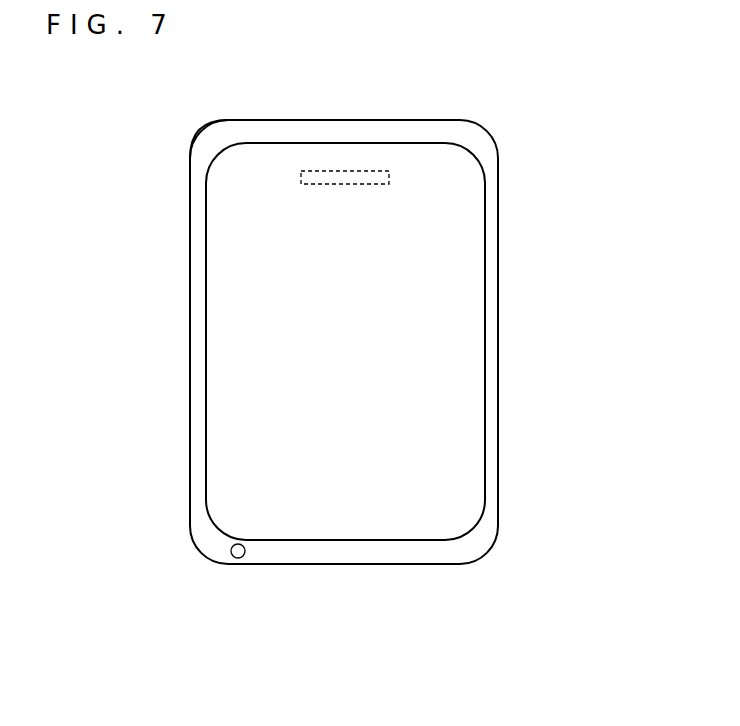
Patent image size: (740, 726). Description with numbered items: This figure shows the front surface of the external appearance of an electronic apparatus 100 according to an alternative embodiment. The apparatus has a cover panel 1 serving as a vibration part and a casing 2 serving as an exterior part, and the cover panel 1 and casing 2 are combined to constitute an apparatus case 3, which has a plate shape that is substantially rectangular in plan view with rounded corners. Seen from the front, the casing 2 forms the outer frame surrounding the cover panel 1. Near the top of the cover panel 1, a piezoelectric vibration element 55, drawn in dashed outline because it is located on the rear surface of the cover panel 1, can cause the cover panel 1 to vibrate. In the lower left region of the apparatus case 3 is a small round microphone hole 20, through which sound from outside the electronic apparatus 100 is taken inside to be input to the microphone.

The electronic apparatus 100 is at (457, 110).
The apparatus case 3 is at (235, 91).
The casing 2 is at (204, 200).
The cover panel 1 is at (235, 190).
The piezoelectric vibration element 55 is at (347, 178).
The microphone hole 20 is at (239, 559).